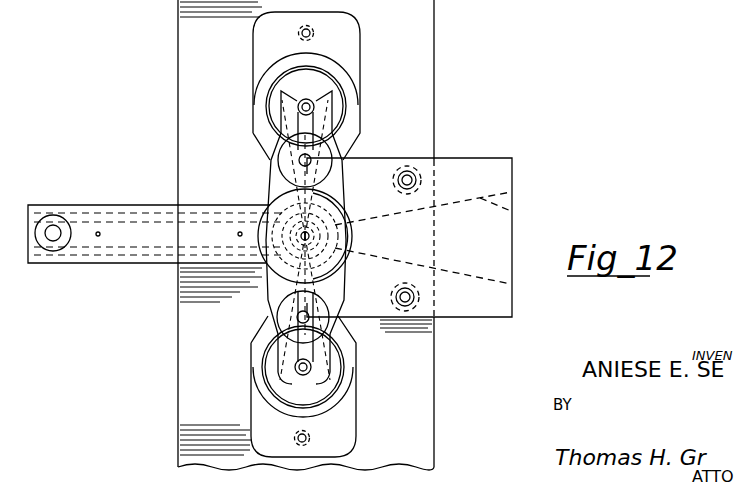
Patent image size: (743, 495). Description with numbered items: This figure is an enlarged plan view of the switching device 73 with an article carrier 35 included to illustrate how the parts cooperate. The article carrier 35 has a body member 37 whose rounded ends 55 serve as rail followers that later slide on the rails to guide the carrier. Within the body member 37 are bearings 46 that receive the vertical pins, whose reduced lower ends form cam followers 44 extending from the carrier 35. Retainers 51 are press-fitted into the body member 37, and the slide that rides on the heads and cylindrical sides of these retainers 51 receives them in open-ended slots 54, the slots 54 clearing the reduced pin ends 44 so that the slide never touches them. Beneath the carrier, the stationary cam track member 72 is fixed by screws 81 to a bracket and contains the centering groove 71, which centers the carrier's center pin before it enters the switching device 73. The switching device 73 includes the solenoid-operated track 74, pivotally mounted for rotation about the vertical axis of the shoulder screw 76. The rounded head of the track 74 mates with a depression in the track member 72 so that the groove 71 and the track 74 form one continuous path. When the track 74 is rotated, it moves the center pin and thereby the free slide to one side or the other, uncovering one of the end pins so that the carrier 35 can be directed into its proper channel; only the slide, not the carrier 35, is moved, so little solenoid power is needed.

The article carrier 35 is at (178, 352).
The body member 37 is at (345, 53).
The cam follower 44 is at (314, 108).
The bearing 46 is at (293, 86).
The retainer 51 is at (287, 155).
The open-ended slot 54 is at (306, 130).
The rounded end 55 is at (350, 42).
The centering groove 71 is at (512, 213).
The cam track member 72 is at (480, 159).
The switching device 73 is at (259, 198).
The solenoid-operated track 74 is at (120, 205).
The shoulder screw 76 is at (310, 237).
The screw 81 is at (398, 179).